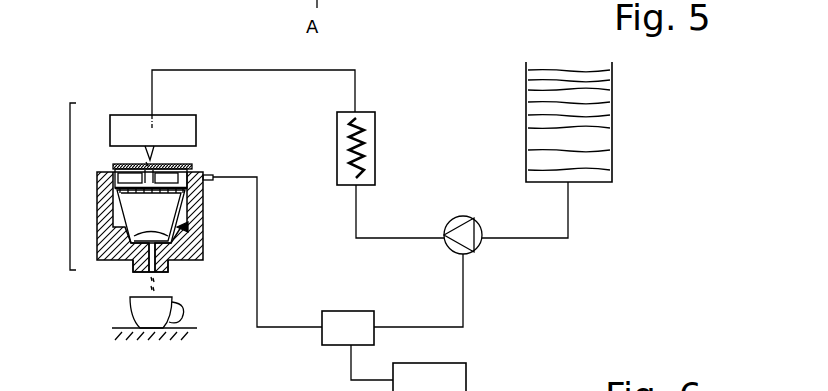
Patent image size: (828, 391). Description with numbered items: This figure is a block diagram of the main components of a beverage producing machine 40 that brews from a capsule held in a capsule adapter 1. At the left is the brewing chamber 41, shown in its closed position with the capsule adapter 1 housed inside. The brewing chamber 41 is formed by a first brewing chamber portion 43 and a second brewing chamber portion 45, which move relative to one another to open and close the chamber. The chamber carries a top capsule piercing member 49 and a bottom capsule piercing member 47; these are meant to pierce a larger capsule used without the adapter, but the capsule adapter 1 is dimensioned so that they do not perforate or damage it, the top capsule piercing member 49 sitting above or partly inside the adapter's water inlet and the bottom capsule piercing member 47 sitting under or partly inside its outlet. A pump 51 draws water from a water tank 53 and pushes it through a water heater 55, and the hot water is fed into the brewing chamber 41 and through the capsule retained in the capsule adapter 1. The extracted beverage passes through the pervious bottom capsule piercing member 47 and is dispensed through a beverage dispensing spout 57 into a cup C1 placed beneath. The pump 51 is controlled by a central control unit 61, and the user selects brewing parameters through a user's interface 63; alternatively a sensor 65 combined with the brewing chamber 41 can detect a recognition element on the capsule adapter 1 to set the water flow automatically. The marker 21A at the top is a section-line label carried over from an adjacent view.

The capsule adapter 1 is at (188, 227).
The section line marker 21A is at (218, 8).
The beverage producing machine 40 is at (514, 265).
The brewing chamber 41 is at (70, 189).
The first brewing chamber portion 43 is at (108, 253).
The second brewing chamber portion 45 is at (178, 123).
The bottom capsule piercing member 47 is at (152, 270).
The top capsule piercing member 49 is at (153, 156).
The pump 51 is at (468, 214).
The water tank 53 is at (602, 123).
The water heater 55 is at (366, 133).
The beverage dispensing spout 57 is at (172, 267).
The central control unit 61 is at (358, 316).
The user's interface 63 is at (456, 373).
The sensor 65 is at (211, 182).
The cup C1 is at (127, 313).